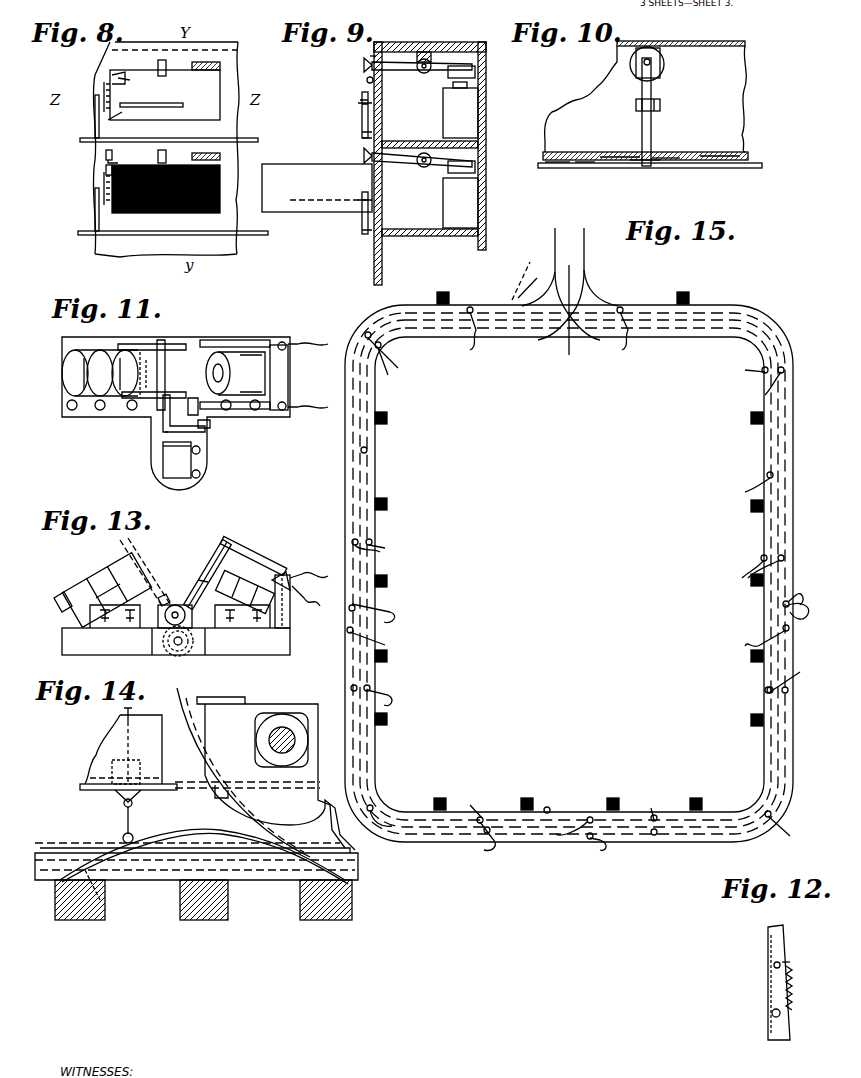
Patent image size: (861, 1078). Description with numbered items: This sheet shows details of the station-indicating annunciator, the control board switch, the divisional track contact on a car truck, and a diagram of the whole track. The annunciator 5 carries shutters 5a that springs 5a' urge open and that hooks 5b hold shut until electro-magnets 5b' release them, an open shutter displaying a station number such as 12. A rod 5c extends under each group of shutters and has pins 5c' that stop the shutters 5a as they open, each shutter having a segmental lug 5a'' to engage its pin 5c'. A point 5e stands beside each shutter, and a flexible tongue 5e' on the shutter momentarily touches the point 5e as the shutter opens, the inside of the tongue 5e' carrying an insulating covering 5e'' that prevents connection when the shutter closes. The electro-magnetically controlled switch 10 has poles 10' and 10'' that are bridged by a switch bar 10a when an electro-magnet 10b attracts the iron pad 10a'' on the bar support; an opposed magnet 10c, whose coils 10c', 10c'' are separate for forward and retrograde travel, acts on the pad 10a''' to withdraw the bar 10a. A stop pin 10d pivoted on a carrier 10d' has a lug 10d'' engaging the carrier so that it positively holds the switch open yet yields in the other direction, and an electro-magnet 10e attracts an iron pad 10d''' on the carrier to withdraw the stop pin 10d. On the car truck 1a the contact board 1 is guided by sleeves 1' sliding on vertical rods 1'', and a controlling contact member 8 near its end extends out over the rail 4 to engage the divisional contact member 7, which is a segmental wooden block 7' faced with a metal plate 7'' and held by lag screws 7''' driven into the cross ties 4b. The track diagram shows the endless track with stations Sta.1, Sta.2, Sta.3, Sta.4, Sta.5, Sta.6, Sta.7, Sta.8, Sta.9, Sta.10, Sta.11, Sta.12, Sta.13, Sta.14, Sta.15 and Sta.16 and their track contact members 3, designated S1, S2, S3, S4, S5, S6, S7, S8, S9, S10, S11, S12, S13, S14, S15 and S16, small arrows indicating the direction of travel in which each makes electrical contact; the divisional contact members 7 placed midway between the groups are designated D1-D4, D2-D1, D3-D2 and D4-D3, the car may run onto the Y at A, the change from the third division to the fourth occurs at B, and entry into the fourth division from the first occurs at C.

In FIG. 8, the annunciator 5 is at (228, 76).
In FIG. 9, the annunciator 5 is at (372, 238).
In FIG. 10, the annunciator 5 is at (553, 152).
In FIG. 8, the shutter 5a is at (129, 171).
In FIG. 9, the shutter 5a is at (317, 188).
In FIG. 10, the shutter 5a is at (669, 179).
In FIG. 8, the spring 5a' is at (75, 134).
In FIG. 9, the spring 5a' is at (347, 100).
In FIG. 10, the spring 5a' is at (620, 138).
In FIG. 8, the segmental lug 5a'' is at (107, 164).
In FIG. 9, the segmental lug 5a'' is at (343, 144).
In FIG. 10, the segmental lug 5a'' is at (644, 180).
In FIG. 8, the hook 5b is at (137, 110).
In FIG. 9, the hook 5b is at (419, 112).
In FIG. 10, the hook 5b is at (670, 112).
In FIG. 9, the electro-magnet 5b' is at (480, 152).
In FIG. 10, the electro-magnet 5b' is at (666, 79).
In FIG. 8, the rod 5c is at (178, 188).
In FIG. 9, the rod 5c is at (367, 177).
In FIG. 10, the rod 5c is at (557, 181).
In FIG. 8, the pin 5c' is at (71, 163).
In FIG. 9, the pin 5c' is at (389, 163).
In FIG. 10, the pin 5c' is at (593, 181).
In FIG. 8, the point 5e is at (236, 89).
In FIG. 10, the point 5e is at (650, 181).
In FIG. 8, the flexible tongue 5e' is at (76, 160).
In FIG. 9, the flexible tongue 5e' is at (330, 53).
In FIG. 10, the flexible tongue 5e' is at (720, 129).
In FIG. 8, the insulating covering 5e'' is at (137, 142).
In FIG. 8, the number indication 12 is at (166, 189).
In FIG. 11, the electro-magnetically controlled switch 10 is at (198, 413).
In FIG. 13, the electro-magnetically controlled switch 10 is at (176, 615).
In FIG. 11, the pole 10' is at (262, 332).
In FIG. 11, the pole 10'' is at (260, 400).
In FIG. 13, the pole 10'' is at (299, 571).
In FIG. 11, the switch bar 10a is at (161, 386).
In FIG. 13, the switch bar 10a is at (251, 544).
In FIG. 13, the iron pad 10a'' is at (175, 574).
In FIG. 13, the pad 10a''' is at (180, 577).
In FIG. 11, the electro-magnet 10b is at (235, 373).
In FIG. 13, the electro-magnet 10b is at (245, 591).
In FIG. 11, the electro-magnet 10c is at (89, 374).
In FIG. 13, the electro-magnet 10c is at (97, 590).
In FIG. 11, the coil core 10c' is at (105, 410).
In FIG. 13, the coil core 10c' is at (105, 575).
In FIG. 11, the coil 10c'' is at (60, 416).
In FIG. 13, the coil 10c'' is at (54, 605).
In FIG. 11, the stop pin 10d is at (206, 375).
In FIG. 12, the stop pin 10d is at (765, 982).
In FIG. 11, the carrier 10d' is at (226, 438).
In FIG. 12, the carrier 10d' is at (764, 989).
In FIG. 12, the lug 10d'' is at (794, 1015).
In FIG. 11, the iron pad 10d''' is at (133, 457).
In FIG. 11, the electro-magnet 10e is at (192, 460).
In FIG. 13, the electro-magnet 10e is at (165, 626).
In FIG. 14, the contact board 1 is at (125, 752).
In FIG. 14, the sleeve 1' is at (141, 752).
In FIG. 14, the vertical rod 1'' is at (112, 712).
In FIG. 14, the truck 1a is at (226, 698).
In FIG. 14, the track rail 4 is at (52, 856).
In FIG. 14, the cross tie 4b is at (82, 922).
In FIG. 15, the divisional controlling contact member 7 is at (446, 571).
In FIG. 14, the segmental wooden block 7' is at (196, 881).
In FIG. 14, the metal plate 7'' is at (204, 844).
In FIG. 14, the lag screw 7''' is at (71, 915).
In FIG. 14, the controlling contact member 8 is at (130, 824).
In FIG. 15, the track contact member 3 is at (581, 573).
In FIG. 15, the Y A is at (569, 355).
In FIG. 15, the division change point B is at (715, 612).
In FIG. 15, the division entry point C is at (512, 300).
In FIG. 15, the divisional contact member designation D1-D4 is at (540, 253).
In FIG. 15, the divisional contact member designation D2-D1 is at (380, 608).
In FIG. 15, the divisional contact member designation D3-D2 is at (578, 793).
In FIG. 15, the divisional contact member designation D4-D3 is at (790, 616).
In FIG. 15, the station Sta.1 is at (443, 292).
In FIG. 15, the station Sta.2 is at (387, 418).
In FIG. 15, the station Sta.3 is at (387, 503).
In FIG. 15, the station Sta.4 is at (387, 580).
In FIG. 15, the station Sta.5 is at (387, 655).
In FIG. 15, the station Sta.6 is at (387, 718).
In FIG. 15, the station Sta.7 is at (440, 798).
In FIG. 15, the station Sta.8 is at (527, 798).
In FIG. 15, the station Sta.9 is at (613, 798).
In FIG. 15, the station Sta.10 is at (696, 798).
In FIG. 15, the station Sta.11 is at (751, 720).
In FIG. 15, the station Sta.12 is at (751, 656).
In FIG. 15, the station Sta.13 is at (751, 580).
In FIG. 15, the station Sta.14 is at (751, 506).
In FIG. 15, the station Sta.15 is at (751, 418).
In FIG. 15, the station Sta.16 is at (683, 292).
In FIG. 15, the track contact member S1 is at (478, 276).
In FIG. 15, the track contact member S2 is at (366, 330).
In FIG. 15, the track contact member S3 is at (368, 452).
In FIG. 15, the track contact member S4 is at (372, 540).
In FIG. 15, the track contact member S5 is at (348, 630).
In FIG. 15, the track contact member S6 is at (352, 686).
In FIG. 15, the track contact member S7 is at (374, 808).
In FIG. 15, the track contact member S8 is at (508, 793).
In FIG. 15, the track contact member S9 is at (632, 790).
In FIG. 15, the track contact member S10 is at (656, 834).
In FIG. 15, the track contact member S11 is at (803, 851).
In FIG. 15, the track contact member S12 is at (766, 690).
In FIG. 15, the track contact member S13 is at (784, 606).
In FIG. 15, the track contact member S14 is at (762, 558).
In FIG. 15, the track contact member S15 is at (760, 368).
In FIG. 15, the track contact member S16 is at (622, 308).